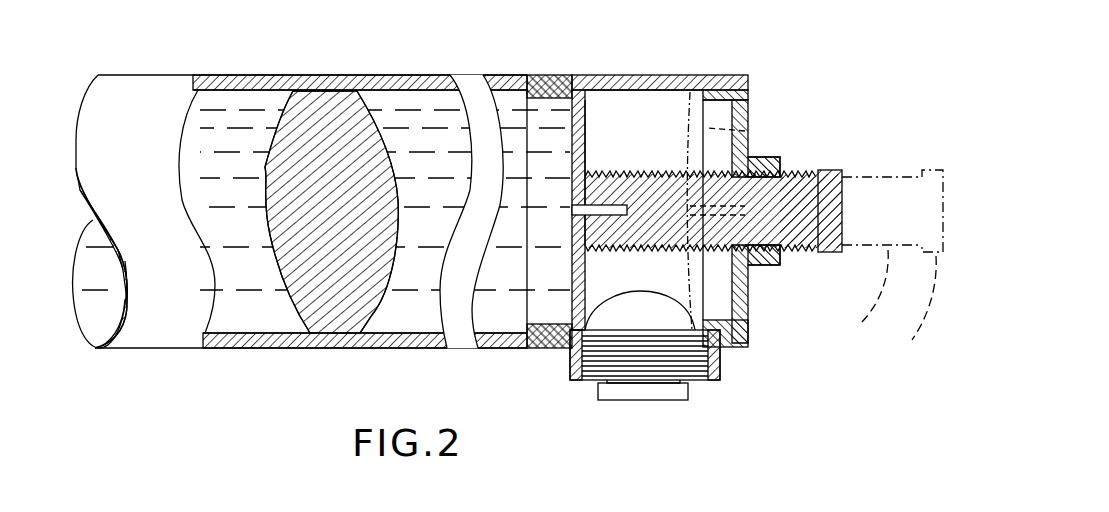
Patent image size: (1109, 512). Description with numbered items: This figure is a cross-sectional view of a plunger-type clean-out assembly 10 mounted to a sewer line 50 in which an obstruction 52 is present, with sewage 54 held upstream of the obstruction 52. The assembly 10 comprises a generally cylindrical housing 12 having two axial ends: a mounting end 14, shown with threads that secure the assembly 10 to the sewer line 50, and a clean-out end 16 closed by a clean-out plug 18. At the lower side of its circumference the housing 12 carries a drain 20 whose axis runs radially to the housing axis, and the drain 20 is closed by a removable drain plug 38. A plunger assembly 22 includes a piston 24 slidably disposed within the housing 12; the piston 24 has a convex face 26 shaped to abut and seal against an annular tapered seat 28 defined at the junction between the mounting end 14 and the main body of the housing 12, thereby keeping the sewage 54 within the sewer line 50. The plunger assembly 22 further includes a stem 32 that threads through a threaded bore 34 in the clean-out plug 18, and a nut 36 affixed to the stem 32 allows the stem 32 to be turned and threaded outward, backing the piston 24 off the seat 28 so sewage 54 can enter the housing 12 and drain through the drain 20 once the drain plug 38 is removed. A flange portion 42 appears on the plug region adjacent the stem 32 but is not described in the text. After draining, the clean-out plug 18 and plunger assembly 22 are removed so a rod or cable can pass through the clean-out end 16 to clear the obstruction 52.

The plunger-type clean-out assembly 10 is at (714, 222).
The housing 12 is at (640, 88).
The mounting end 14 is at (552, 92).
The clean-out end 16 is at (735, 340).
The clean-out plug 18 is at (758, 88).
The drain 20 is at (570, 362).
The plunger assembly 22 is at (614, 261).
The piston 24 is at (585, 128).
The convex face 26 is at (572, 258).
The tapered seat 28 is at (583, 328).
The stem 32 is at (627, 176).
The threaded bore 34 is at (760, 232).
The nut 36 is at (836, 172).
The drain plug 38 is at (645, 395).
The flange 42 is at (782, 160).
The sewer line 50 is at (253, 75).
The obstruction 52 is at (320, 322).
The sewage 54 is at (417, 127).